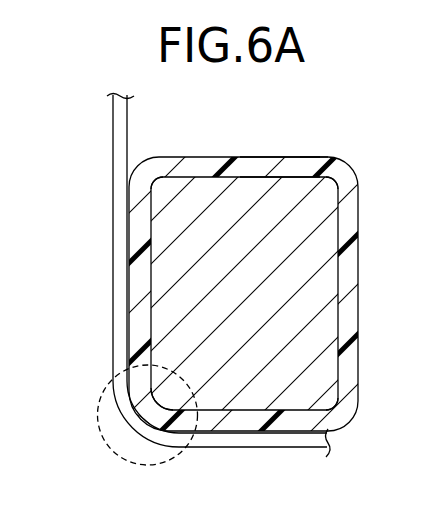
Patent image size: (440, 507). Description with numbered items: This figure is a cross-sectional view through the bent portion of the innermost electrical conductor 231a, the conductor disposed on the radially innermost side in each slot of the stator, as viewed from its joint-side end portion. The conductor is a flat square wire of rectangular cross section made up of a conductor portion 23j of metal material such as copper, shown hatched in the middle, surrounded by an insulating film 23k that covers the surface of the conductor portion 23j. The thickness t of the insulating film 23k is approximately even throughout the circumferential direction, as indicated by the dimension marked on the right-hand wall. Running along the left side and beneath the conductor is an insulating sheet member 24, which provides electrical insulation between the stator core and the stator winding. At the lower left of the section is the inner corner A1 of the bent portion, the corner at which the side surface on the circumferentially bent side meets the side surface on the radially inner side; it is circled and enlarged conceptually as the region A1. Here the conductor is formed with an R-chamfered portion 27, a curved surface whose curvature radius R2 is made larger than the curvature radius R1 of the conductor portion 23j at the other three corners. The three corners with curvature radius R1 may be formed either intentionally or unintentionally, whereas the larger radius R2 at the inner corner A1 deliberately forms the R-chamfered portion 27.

The insulating sheet member 24 is at (122, 140).
The conductor portion 23j is at (238, 207).
The insulating film 23k is at (285, 168).
The innermost electrical conductor 231a is at (327, 157).
The R-chamfered portion 27 is at (145, 417).
The inner corner A1 is at (100, 407).
The curvature radius R1 is at (155, 182).
The curvature radius R2 is at (157, 395).
The thickness t is at (308, 333).